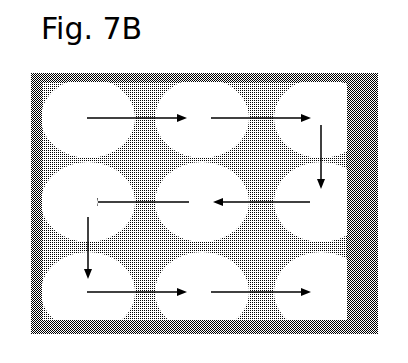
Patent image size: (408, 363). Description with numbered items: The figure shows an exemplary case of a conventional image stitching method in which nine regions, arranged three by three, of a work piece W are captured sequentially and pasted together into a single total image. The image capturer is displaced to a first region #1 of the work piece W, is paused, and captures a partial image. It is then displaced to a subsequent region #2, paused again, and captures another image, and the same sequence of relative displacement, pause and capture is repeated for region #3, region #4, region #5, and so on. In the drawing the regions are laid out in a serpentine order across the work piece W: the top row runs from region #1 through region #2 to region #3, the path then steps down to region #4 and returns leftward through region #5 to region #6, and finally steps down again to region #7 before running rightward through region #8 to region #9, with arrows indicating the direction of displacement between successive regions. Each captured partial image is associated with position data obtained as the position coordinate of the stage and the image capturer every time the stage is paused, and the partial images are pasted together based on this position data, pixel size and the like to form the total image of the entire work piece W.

The work piece W is at (210, 72).
The first region 1 is at (114, 106).
The subsequent region 2 is at (234, 106).
The region 3 is at (302, 137).
The region 4 is at (272, 191).
The region 5 is at (150, 191).
The region 6 is at (70, 224).
The region 7 is at (114, 281).
The region 8 is at (234, 281).
The region 9 is at (302, 281).